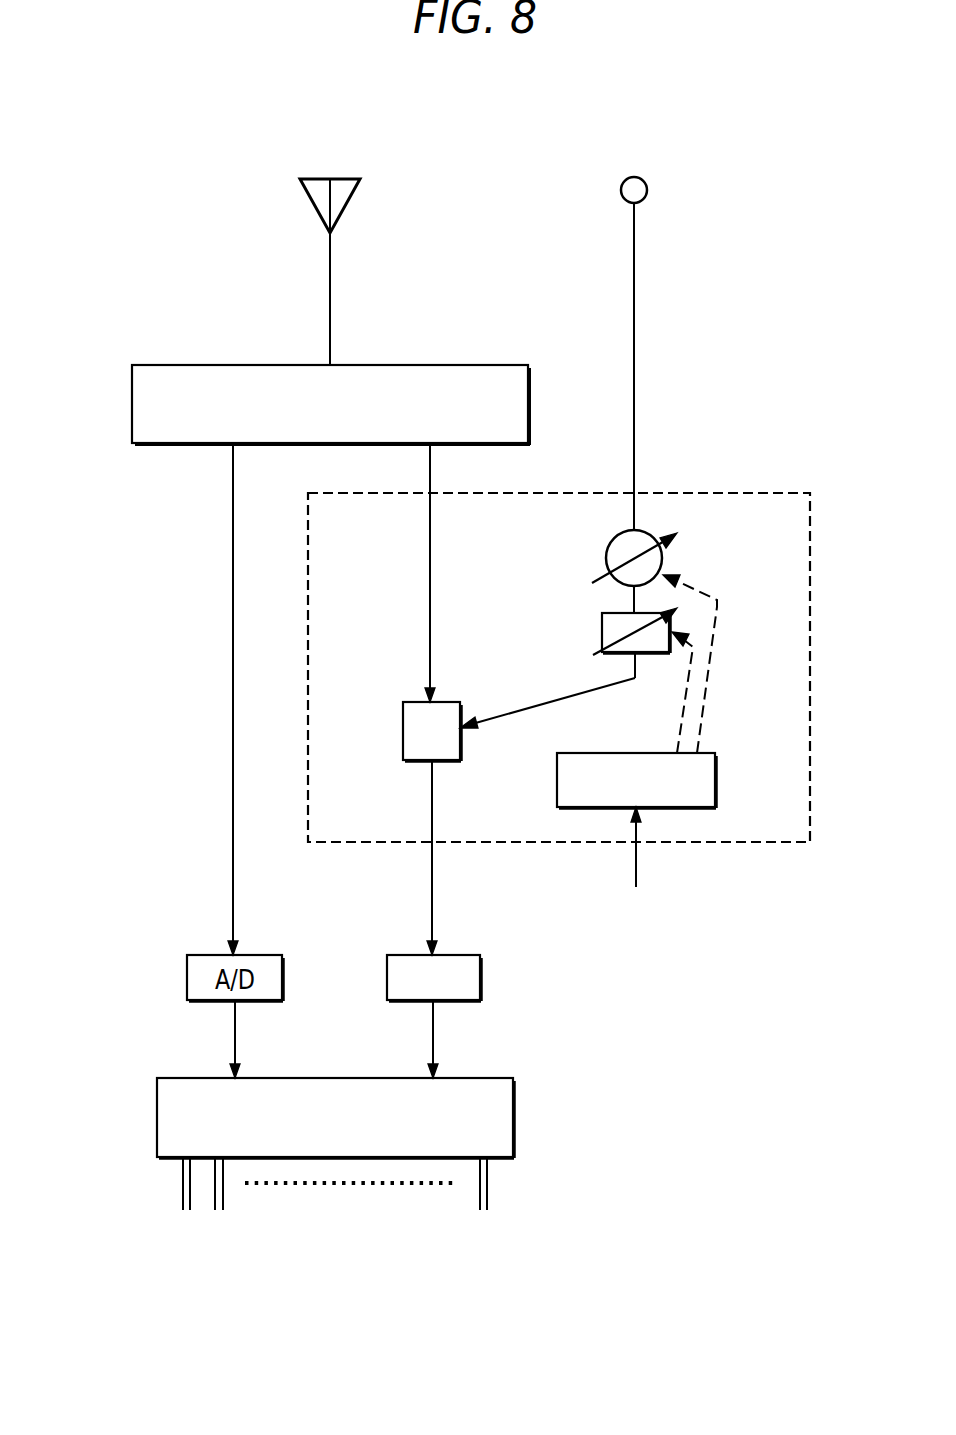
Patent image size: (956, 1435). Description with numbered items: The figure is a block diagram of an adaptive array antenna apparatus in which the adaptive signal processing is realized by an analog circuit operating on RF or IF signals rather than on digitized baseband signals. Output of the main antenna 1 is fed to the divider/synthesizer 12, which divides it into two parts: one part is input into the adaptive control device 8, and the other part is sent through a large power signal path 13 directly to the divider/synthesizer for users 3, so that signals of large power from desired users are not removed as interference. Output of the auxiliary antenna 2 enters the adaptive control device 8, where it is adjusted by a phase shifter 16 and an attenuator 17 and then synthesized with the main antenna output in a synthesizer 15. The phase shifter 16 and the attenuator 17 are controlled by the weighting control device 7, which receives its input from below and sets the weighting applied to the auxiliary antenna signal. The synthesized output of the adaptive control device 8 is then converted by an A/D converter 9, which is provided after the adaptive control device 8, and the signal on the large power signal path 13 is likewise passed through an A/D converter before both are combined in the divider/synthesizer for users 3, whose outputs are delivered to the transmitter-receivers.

The main antenna 1 is at (345, 178).
The auxiliary antenna 2 is at (637, 178).
The divider/synthesizer for users 3 is at (155, 1120).
The weighting control device 7 is at (717, 778).
The adaptive control device 8 is at (812, 660).
The A/D converter 9 is at (483, 977).
The divider/synthesizer 12 is at (131, 404).
The large power signal path 13 is at (233, 700).
The synthesizer 15 is at (403, 734).
The phase shifter 16 is at (606, 560).
The attenuator 17 is at (600, 633).